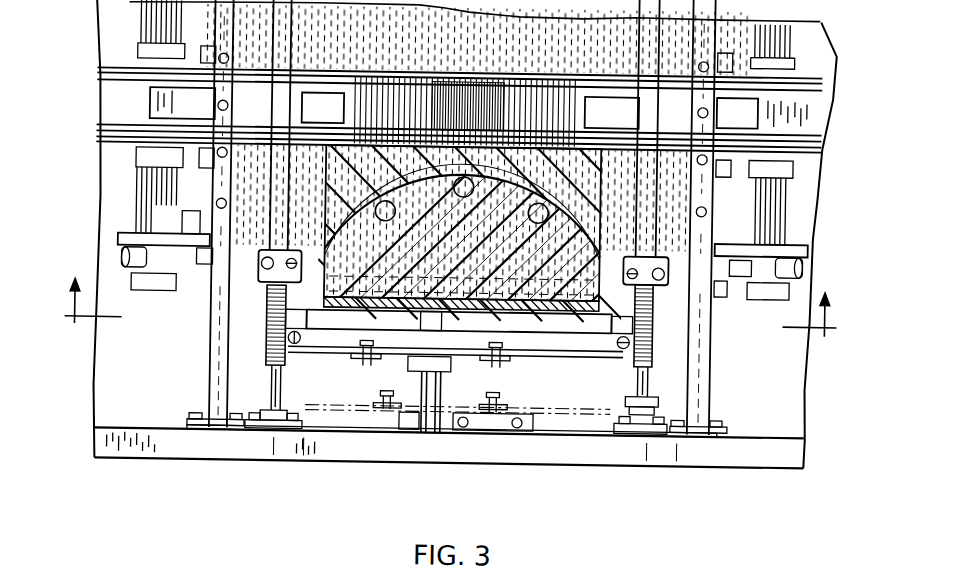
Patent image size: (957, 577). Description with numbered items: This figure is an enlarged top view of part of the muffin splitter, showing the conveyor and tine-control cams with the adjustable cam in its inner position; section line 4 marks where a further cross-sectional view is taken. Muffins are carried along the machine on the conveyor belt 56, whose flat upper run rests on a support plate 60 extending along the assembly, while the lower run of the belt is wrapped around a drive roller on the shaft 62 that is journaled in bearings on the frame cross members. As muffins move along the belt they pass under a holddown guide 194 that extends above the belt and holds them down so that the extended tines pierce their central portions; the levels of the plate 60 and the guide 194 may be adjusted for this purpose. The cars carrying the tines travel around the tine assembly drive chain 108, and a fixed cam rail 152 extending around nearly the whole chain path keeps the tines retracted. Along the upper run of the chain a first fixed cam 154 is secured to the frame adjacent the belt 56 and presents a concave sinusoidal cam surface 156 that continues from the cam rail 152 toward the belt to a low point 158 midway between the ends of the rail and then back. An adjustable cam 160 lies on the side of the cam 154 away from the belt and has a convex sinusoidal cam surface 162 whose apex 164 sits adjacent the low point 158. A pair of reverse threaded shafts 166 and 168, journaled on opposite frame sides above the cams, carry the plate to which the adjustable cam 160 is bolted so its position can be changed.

The support plate 60 is at (116, 80).
The holddown guide 194 is at (148, 112).
The conveyor belt 56 is at (814, 108).
The fixed cam rail 152 is at (117, 242).
The first fixed cam 154 is at (579, 181).
The tine assembly drive chain 108 is at (192, 266).
The concave sinusoidal cam surface 156 is at (655, 330).
The reverse threaded shaft 166 is at (270, 383).
The reverse threaded shaft 168 is at (655, 377).
The apex 164 is at (405, 230).
The adjustable cam 160 is at (437, 232).
The low point 158 is at (480, 217).
The convex sinusoidal cam surface 162 is at (541, 244).
The shaft 62 is at (431, 423).
The section line 4- 4 is at (450, 322).